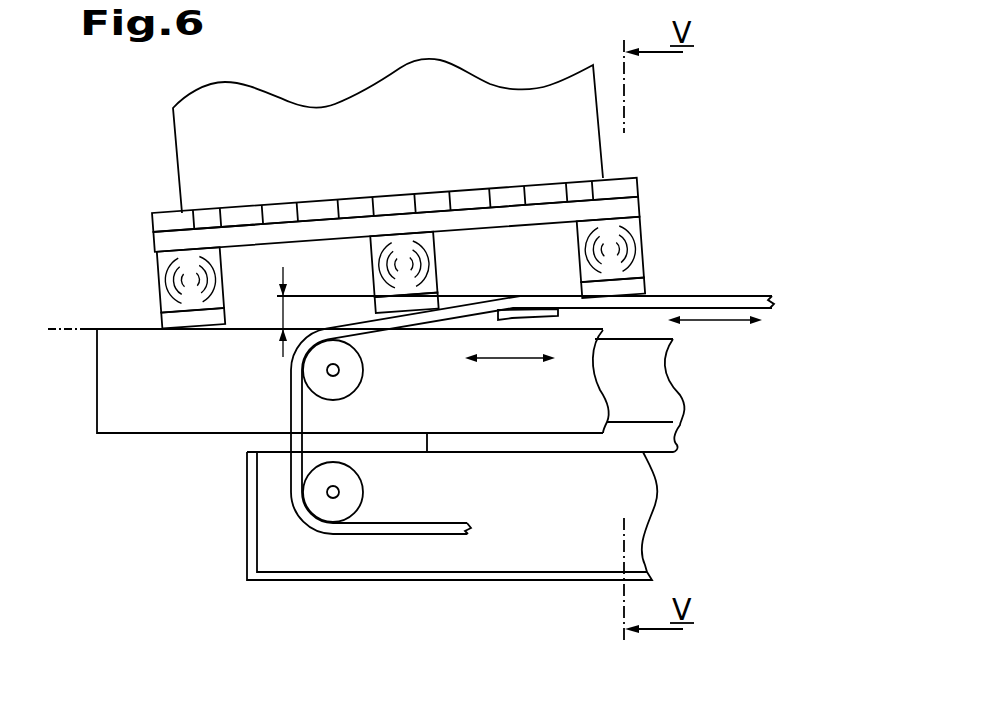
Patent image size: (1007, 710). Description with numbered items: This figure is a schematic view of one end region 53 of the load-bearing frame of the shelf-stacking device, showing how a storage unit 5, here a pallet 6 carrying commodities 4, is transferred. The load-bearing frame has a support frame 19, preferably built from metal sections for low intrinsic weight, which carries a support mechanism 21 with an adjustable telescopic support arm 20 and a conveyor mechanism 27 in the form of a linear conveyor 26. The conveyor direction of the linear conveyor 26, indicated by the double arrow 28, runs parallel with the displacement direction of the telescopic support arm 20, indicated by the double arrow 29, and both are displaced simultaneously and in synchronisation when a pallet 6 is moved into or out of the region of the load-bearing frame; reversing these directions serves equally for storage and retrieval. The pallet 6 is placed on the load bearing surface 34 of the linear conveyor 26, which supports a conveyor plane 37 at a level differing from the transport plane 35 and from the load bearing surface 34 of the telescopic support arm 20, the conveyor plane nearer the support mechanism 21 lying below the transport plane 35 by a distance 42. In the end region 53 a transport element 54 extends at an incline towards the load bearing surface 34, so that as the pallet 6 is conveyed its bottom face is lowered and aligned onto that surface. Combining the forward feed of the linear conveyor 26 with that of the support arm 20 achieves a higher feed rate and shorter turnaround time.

The commodities 4 is at (528, 122).
The storage unit 5 is at (766, 71).
The pallet 6 is at (626, 207).
The support frame 19 is at (550, 547).
The telescopic support arm 20 is at (187, 418).
The support mechanism 21 is at (732, 395).
The linear conveyor 26 is at (705, 297).
The conveyor mechanism 27 is at (776, 264).
The double arrow 28 is at (712, 323).
The double arrow 29 is at (500, 360).
The load bearing surface 34 is at (230, 329).
The transport plane 35 is at (52, 329).
The conveyor plane 37 is at (323, 296).
The distance 42 is at (275, 316).
The end region 53 is at (336, 253).
The transport element 54 is at (481, 297).